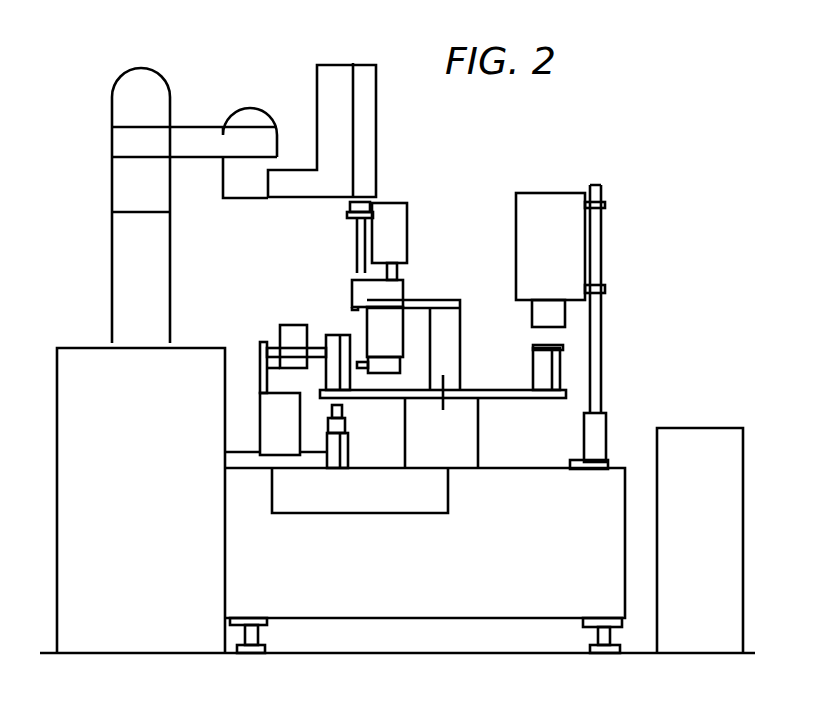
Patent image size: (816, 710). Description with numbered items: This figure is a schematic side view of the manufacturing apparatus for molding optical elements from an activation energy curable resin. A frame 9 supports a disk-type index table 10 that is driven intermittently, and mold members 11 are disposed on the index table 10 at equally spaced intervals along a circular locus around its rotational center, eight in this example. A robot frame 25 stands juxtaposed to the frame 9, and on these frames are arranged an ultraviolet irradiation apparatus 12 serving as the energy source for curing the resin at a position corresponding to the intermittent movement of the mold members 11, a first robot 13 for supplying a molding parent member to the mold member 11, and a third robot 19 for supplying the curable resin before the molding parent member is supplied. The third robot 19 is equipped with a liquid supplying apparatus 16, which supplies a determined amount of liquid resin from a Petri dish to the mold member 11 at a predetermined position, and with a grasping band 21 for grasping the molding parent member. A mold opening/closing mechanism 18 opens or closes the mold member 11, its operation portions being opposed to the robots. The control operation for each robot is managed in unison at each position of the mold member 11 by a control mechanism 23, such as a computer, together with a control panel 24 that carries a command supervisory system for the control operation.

The frame 9 is at (523, 487).
The index table 10 is at (495, 388).
The mold member 11 is at (340, 335).
The ultraviolet irradiation apparatus 12 is at (550, 208).
The first robot 13 is at (273, 333).
The liquid supplying apparatus 16 is at (398, 223).
The mold opening/closing mechanism 18 is at (440, 288).
The third robot 19 is at (203, 135).
The grasping band 21 is at (352, 288).
The control mechanism 23 is at (690, 428).
The control panel 24 is at (417, 502).
The robot frame 25 is at (192, 360).